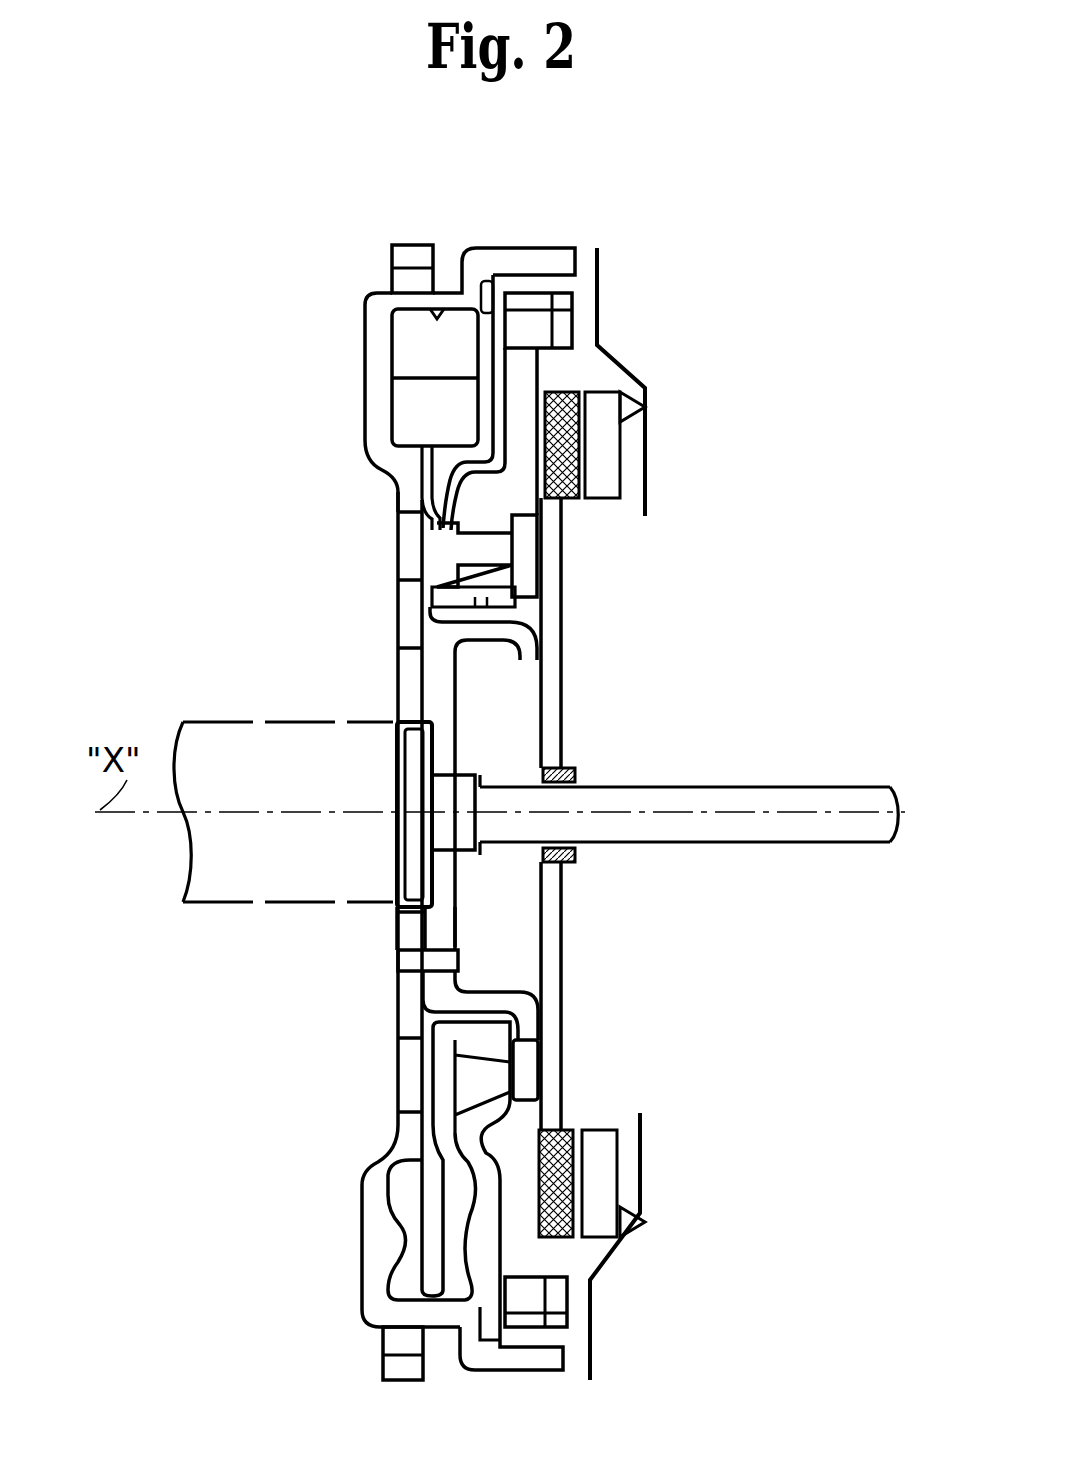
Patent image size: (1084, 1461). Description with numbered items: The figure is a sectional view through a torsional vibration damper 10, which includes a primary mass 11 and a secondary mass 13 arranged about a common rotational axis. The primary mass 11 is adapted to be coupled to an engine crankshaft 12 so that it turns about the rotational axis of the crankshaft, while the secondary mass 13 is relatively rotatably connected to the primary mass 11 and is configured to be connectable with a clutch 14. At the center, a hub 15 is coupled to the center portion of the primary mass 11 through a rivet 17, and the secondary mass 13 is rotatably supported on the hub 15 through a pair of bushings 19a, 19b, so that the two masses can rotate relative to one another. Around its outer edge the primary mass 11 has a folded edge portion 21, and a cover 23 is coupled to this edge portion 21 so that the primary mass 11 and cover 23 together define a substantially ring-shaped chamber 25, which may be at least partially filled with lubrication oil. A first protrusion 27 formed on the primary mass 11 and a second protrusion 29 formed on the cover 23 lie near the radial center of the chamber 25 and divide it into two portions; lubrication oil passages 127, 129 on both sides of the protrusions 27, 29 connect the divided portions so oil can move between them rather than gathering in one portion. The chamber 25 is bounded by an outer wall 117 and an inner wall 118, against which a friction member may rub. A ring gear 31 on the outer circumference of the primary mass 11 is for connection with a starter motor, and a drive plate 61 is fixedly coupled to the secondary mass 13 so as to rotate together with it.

The torsional vibration damper 10 is at (797, 511).
The primary mass 11 is at (400, 655).
The engine crankshaft 12 is at (244, 722).
The secondary mass 13 is at (535, 425).
The clutch 14 is at (623, 520).
The hub 15 is at (396, 712).
The rivet 17 is at (398, 958).
The bushing 19a is at (527, 608).
The bushing 19b is at (425, 613).
The folded edge portion 21 is at (533, 247).
The cover 23 is at (493, 368).
The ring-shaped chamber 25 is at (400, 1292).
The first protrusion 27 is at (390, 1233).
The second protrusion 29 is at (473, 1257).
The ring gear 31 is at (392, 283).
The drive plate 61 is at (440, 483).
The outer wall 117 is at (438, 309).
The inner wall 118 is at (398, 455).
The lubrication oil passage 127 is at (400, 1172).
The lubrication oil passage 129 is at (390, 1320).